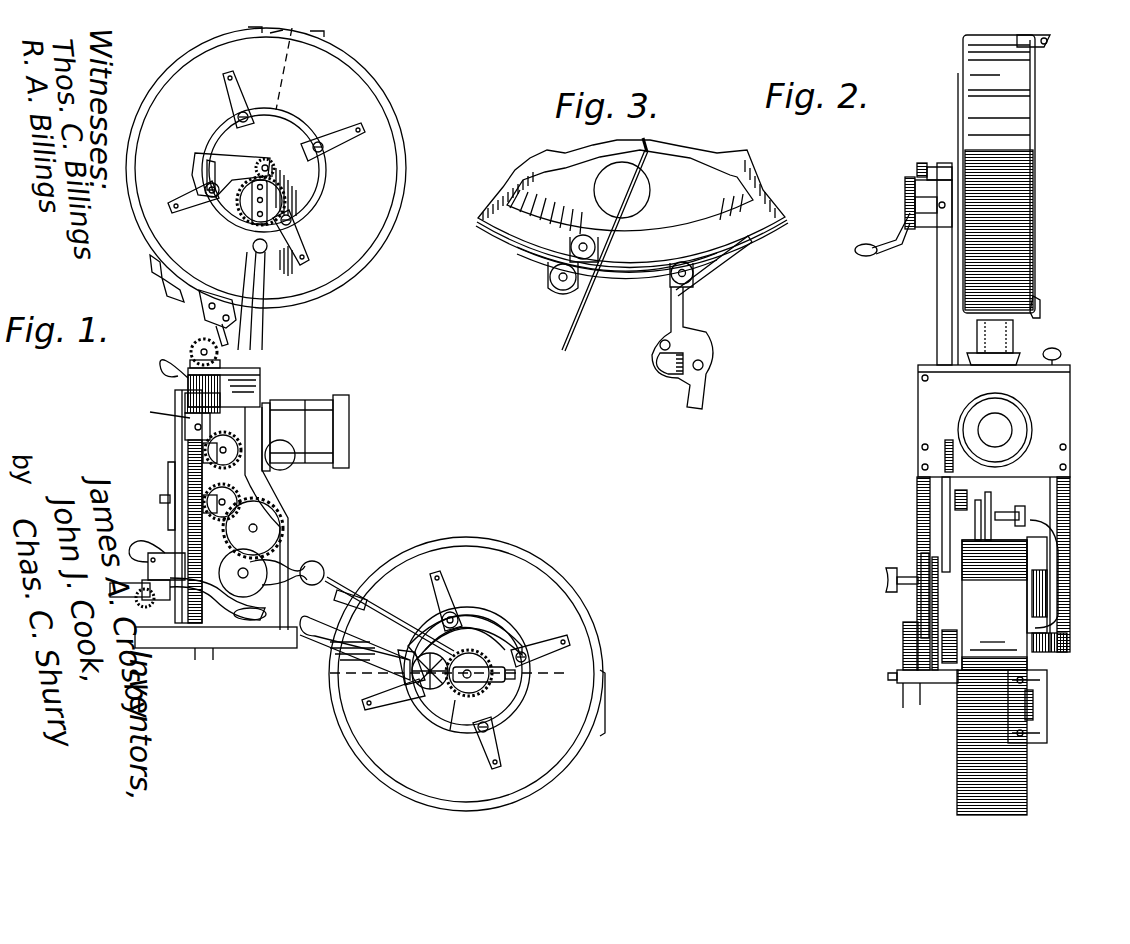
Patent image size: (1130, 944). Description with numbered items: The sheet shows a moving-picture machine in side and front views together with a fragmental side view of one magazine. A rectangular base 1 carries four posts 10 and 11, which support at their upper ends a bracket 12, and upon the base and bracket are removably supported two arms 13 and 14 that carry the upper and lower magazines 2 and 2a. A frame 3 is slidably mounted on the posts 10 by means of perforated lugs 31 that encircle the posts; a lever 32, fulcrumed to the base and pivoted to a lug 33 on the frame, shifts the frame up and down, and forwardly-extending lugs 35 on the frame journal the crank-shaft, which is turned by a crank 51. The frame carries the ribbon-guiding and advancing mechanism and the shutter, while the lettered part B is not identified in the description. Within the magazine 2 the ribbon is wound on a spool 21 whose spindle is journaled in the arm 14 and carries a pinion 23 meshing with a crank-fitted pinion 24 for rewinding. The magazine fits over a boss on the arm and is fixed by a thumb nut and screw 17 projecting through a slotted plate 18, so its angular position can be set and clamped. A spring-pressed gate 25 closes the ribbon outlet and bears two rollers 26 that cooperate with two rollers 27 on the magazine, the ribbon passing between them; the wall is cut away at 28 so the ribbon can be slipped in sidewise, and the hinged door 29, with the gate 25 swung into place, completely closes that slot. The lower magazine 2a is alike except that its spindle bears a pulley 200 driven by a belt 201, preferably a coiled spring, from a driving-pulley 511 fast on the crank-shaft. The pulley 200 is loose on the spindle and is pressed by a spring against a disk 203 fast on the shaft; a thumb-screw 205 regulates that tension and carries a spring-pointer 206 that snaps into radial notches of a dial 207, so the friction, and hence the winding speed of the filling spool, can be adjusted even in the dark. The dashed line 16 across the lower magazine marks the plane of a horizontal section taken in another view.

In FIG. 1, the base 1 is at (230, 648).
In FIG. 2, the base 1 is at (1068, 642).
In FIG. 1, the magazine 2 is at (266, 167).
In FIG. 3, the magazine 2 is at (765, 192).
In FIG. 2, the magazine 2 is at (1004, 200).
In FIG. 1, the magazine 2a is at (578, 610).
In FIG. 2, the magazine 2a is at (994, 605).
In FIG. 1, the frame 3 is at (178, 452).
In FIG. 2, the frame 3 is at (1078, 310).
In FIG. 1, the posts 10 is at (197, 648).
In FIG. 1, the posts 11 is at (268, 490).
In FIG. 2, the posts 11 is at (917, 506).
In FIG. 1, the bracket 12 is at (262, 381).
In FIG. 2, the bracket 12 is at (994, 412).
In FIG. 1, the arm 13 is at (330, 670).
In FIG. 2, the arm 13 is at (912, 690).
In FIG. 1, the arm 14 is at (262, 320).
In FIG. 2, the arm 14 is at (945, 302).
In FIG. 1, the section line 16 is at (546, 692).
In FIG. 1, the thumb nut and screw 17 is at (456, 614).
In FIG. 1, the slotted plate 18 is at (218, 160).
In FIG. 3, the spool 21 is at (630, 244).
In FIG. 1, the pinion 23 is at (270, 162).
In FIG. 2, the pinion 23 is at (922, 163).
In FIG. 1, the pinion 24 is at (284, 203).
In FIG. 2, the pinion 24 is at (905, 196).
In FIG. 1, the gate 25 is at (212, 298).
In FIG. 3, the gate 25 is at (694, 318).
In FIG. 3, the rollers 26 is at (690, 378).
In FIG. 3, the rollers 27 is at (556, 290).
In FIG. 3, the slot 28 is at (590, 260).
In FIG. 2, the door 29 is at (1038, 218).
In FIG. 1, the perforated lugs 31 is at (192, 405).
In FIG. 1, the lever 32 is at (235, 635).
In FIG. 1, the lug 33 is at (157, 560).
In FIG. 1, the lugs 35 is at (213, 648).
In FIG. 1, the crank 51 is at (303, 648).
In FIG. 2, the crank 51 is at (884, 578).
In FIG. 1, the driving-pulley 511 is at (270, 565).
In FIG. 2, the driving-pulley 511 is at (932, 560).
In FIG. 1, the pulley 200 is at (490, 690).
In FIG. 2, the pulley 200 is at (947, 690).
In FIG. 1, the belt 201 is at (400, 652).
In FIG. 2, the belt 201 is at (921, 615).
In FIG. 1, the disk 203 is at (462, 725).
In FIG. 1, the thumb-screw 205 is at (498, 630).
In FIG. 1, the spring-pointer 206 is at (427, 640).
In FIG. 2, the spring-pointer 206 is at (897, 662).
In FIG. 1, the dial 207 is at (452, 664).
In FIG. 1, the lens barrel B is at (352, 430).
In FIG. 2, the lens barrel B is at (1034, 428).